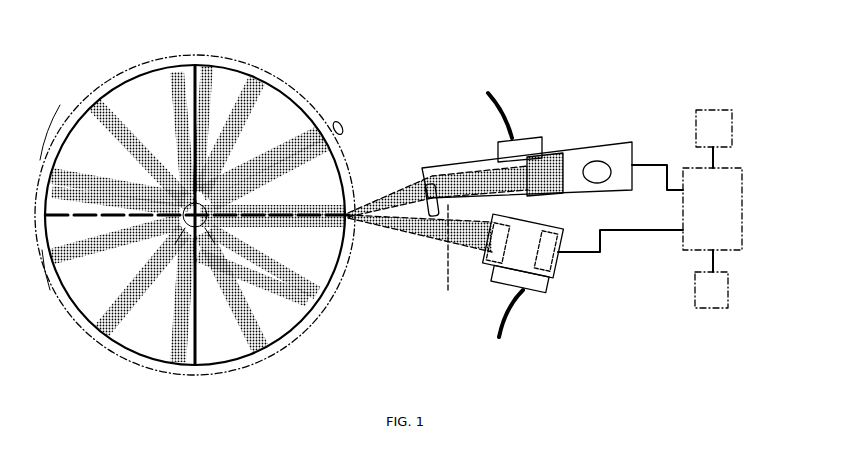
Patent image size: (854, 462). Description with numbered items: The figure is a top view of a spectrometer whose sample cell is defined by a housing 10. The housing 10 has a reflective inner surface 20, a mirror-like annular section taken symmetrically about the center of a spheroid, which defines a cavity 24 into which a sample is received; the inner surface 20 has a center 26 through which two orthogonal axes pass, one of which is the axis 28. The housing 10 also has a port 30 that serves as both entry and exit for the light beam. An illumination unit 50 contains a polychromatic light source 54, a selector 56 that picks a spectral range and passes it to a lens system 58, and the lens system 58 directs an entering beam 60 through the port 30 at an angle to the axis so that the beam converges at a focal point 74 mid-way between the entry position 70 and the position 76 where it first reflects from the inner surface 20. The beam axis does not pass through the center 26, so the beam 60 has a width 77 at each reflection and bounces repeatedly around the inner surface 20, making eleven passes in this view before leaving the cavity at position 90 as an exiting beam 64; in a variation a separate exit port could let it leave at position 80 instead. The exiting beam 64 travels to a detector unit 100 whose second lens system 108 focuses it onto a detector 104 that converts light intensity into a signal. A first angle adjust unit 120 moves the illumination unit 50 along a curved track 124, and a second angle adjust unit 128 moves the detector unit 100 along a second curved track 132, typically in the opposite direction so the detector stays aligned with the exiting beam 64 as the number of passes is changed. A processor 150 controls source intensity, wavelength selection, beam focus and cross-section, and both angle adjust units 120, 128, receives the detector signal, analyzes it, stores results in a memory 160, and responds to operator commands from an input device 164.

The housing 10 is at (262, 62).
The reflective inner surface 20 is at (148, 76).
The cavity 24 is at (283, 112).
The center 26 is at (217, 201).
The axis 28 is at (212, 75).
The port 30 is at (355, 190).
The illumination unit 50 is at (576, 145).
The polychromatic light source 54 is at (606, 164).
The selector 56 is at (545, 155).
The lens system 58 is at (433, 183).
The entering beam of light 60 is at (384, 196).
The exiting beam 64 is at (400, 256).
The position 70 is at (366, 205).
The focal point 74 is at (219, 243).
The position 76 is at (52, 300).
The width 77 is at (346, 128).
The position 80 is at (45, 150).
The position 90 is at (360, 232).
The detector unit 100 is at (545, 287).
The detector 104 is at (556, 263).
The second lens system 108 is at (490, 284).
The first angle adjust unit 120 is at (502, 142).
The curved track 124 is at (505, 110).
The second angle adjust unit 128 is at (526, 292).
The optical fiber 132 is at (500, 312).
The processor 150 is at (742, 223).
The memory 160 is at (731, 125).
The operator input device 164 is at (728, 298).